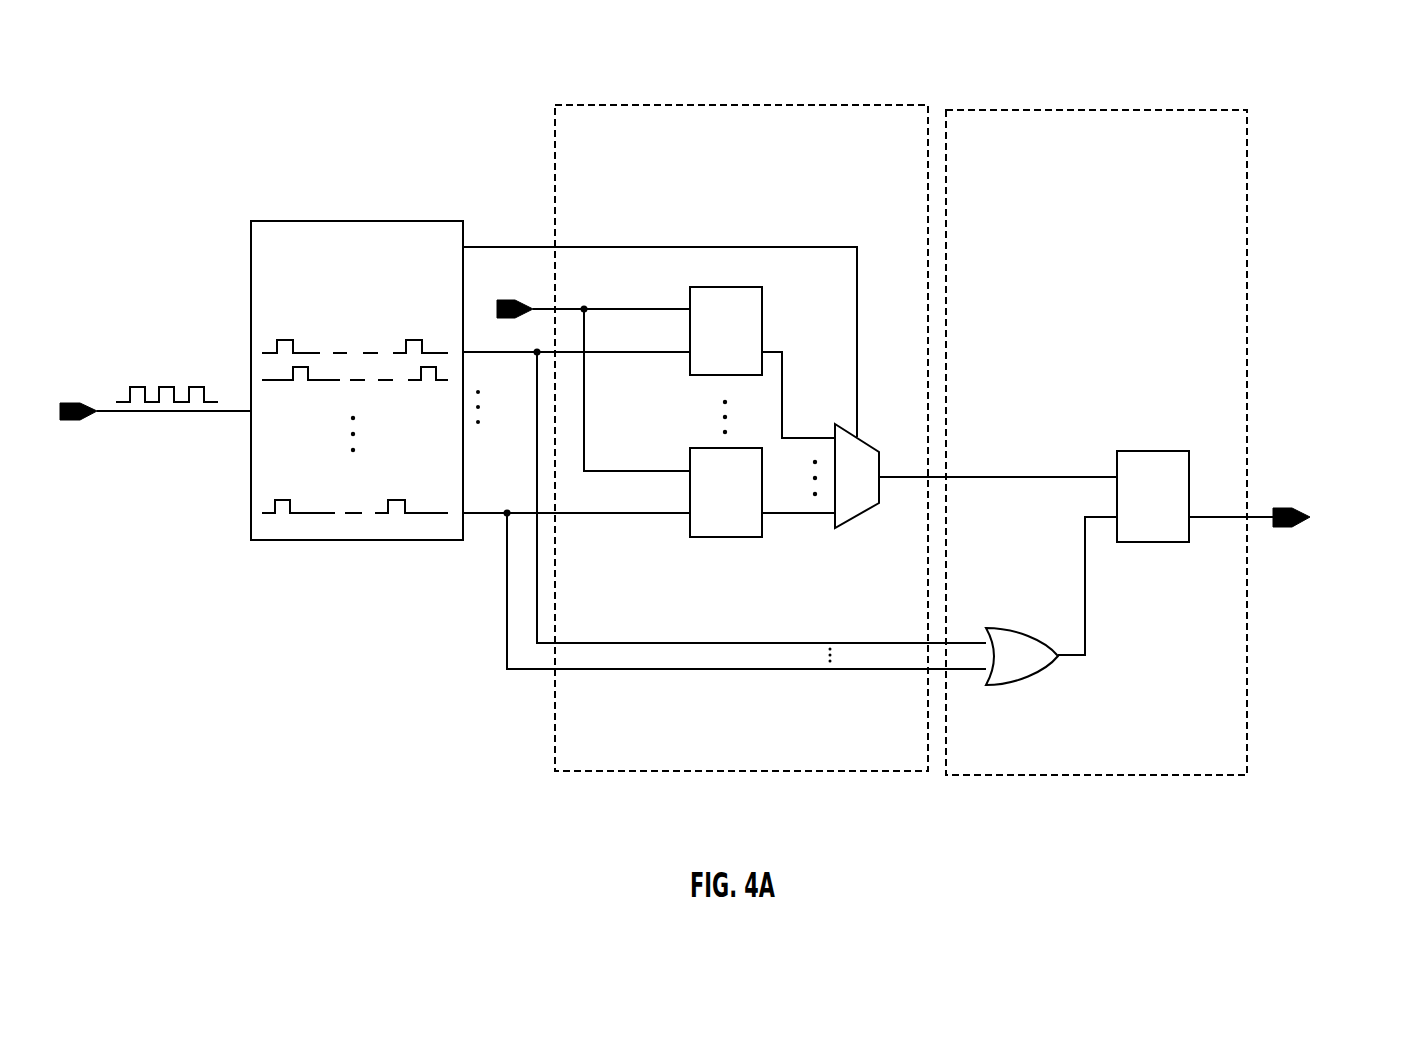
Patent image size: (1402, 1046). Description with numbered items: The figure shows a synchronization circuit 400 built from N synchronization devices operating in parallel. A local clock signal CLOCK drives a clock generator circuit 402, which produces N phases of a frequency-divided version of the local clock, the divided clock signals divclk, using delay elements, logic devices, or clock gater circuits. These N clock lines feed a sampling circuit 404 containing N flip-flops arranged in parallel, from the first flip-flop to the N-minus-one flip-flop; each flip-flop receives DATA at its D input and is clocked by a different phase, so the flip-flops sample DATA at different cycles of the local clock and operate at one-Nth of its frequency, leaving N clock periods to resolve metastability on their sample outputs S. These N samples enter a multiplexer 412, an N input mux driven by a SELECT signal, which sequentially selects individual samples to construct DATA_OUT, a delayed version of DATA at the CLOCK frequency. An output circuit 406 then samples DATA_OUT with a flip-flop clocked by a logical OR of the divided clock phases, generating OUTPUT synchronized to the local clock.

The synchronization circuit 400 is at (701, 414).
The clock generator circuit 402 is at (379, 311).
The sampling circuit 404 is at (751, 222).
The output circuit 406 is at (1106, 232).
The multiplexer 412 is at (878, 489).